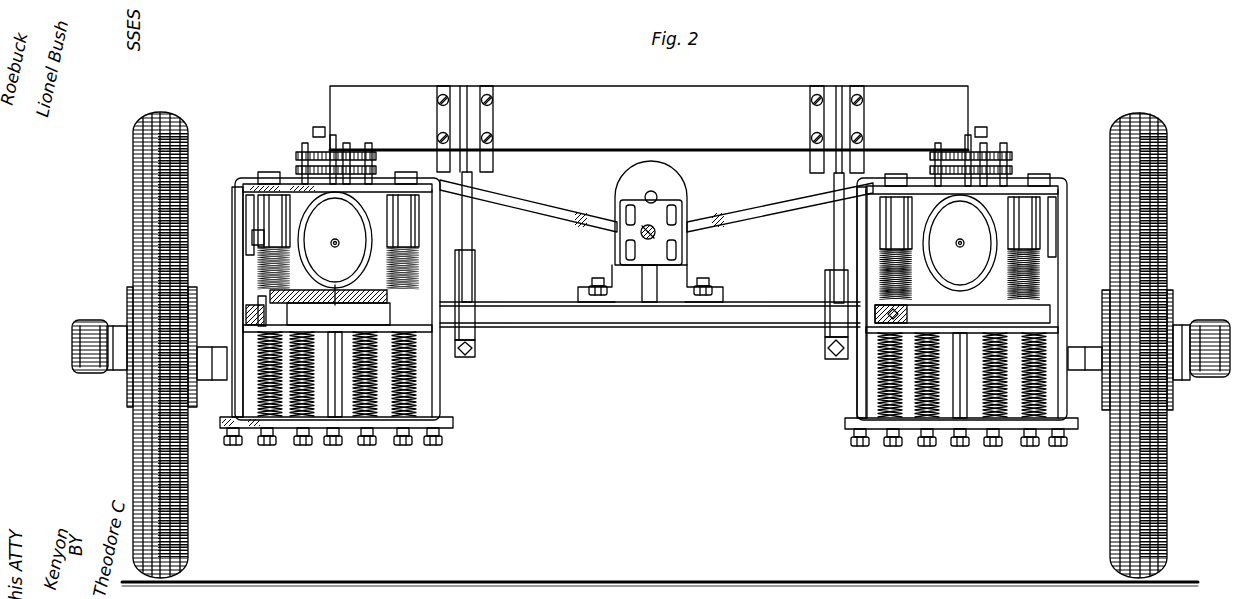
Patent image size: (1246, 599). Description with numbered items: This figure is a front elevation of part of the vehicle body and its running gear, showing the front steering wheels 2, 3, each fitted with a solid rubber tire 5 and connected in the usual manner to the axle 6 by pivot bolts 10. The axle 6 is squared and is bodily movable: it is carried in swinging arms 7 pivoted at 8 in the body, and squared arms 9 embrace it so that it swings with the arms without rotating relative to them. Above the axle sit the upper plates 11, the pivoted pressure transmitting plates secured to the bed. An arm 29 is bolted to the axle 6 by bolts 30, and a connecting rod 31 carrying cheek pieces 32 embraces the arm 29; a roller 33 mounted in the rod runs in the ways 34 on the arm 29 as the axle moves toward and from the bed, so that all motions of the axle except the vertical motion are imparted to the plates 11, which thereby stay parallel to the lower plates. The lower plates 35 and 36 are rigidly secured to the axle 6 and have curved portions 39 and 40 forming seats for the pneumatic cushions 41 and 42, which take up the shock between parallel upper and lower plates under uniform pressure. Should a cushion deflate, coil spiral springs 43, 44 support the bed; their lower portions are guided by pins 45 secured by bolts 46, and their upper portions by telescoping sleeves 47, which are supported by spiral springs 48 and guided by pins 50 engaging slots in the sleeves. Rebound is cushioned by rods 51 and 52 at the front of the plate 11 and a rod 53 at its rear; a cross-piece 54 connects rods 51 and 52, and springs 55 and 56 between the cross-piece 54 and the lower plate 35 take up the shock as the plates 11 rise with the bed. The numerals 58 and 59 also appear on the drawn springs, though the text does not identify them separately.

The front steering wheel 2 is at (150, 212).
The front steering wheel 3 is at (1155, 494).
The solid rubber tire 5 is at (1142, 117).
The axle 6 is at (702, 326).
The swinging arm 7 is at (473, 258).
The pivot 8 is at (472, 160).
The squared arm 9 is at (466, 300).
The pivot bolt 10 is at (216, 380).
The upper plate 11 is at (292, 185).
The arm 29 is at (655, 266).
The bolt 30 is at (608, 292).
The connecting rod 31 is at (535, 218).
The cheek piece 32 is at (676, 216).
The roller 33 is at (652, 228).
The way 34 is at (650, 290).
The lower plate 35 is at (385, 300).
The lower plate 36 is at (836, 340).
The curved portion 39 is at (335, 248).
The curved portion 40 is at (955, 278).
The pneumatic cushion 41 is at (372, 180).
The pneumatic cushion 42 is at (1003, 175).
The coil spiral spring 43 is at (256, 240).
The coil spiral spring 44 is at (440, 250).
The pin 45 is at (252, 312).
The bolt 46 is at (498, 328).
The telescoping sleeve 47 is at (252, 215).
The spiral spring 48 is at (390, 170).
The pin 50 is at (244, 200).
The rod 51 is at (236, 400).
The rod 52 is at (445, 350).
The rod 53 is at (352, 415).
The cross-piece 54 is at (455, 425).
The spring 55 is at (278, 415).
The spring 56 is at (415, 408).
The spring 58 is at (298, 410).
The spring 59 is at (382, 405).